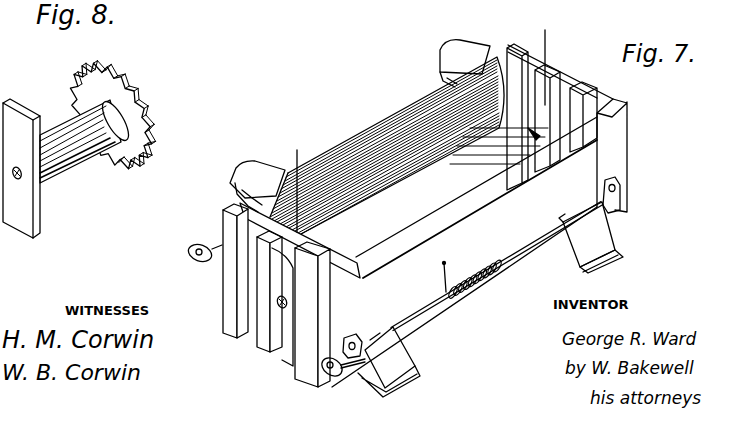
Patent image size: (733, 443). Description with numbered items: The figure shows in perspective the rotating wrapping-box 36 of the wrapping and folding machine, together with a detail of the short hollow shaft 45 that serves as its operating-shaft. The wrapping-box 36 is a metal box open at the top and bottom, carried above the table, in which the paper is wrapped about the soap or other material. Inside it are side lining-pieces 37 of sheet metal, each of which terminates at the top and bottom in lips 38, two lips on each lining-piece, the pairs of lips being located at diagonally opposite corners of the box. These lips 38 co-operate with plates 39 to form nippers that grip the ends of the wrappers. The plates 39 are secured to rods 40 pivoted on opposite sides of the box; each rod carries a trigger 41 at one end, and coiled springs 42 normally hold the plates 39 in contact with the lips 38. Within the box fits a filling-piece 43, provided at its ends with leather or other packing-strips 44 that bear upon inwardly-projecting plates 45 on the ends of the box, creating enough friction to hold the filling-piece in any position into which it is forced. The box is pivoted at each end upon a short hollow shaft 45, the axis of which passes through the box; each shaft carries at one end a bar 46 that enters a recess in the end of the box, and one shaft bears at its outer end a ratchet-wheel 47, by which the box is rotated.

In FIG. 7, the wrapping-box 36 is at (464, 252).
In FIG. 7, the side lining-piece 37 is at (383, 212).
In FIG. 7, the lip 38 is at (628, 270).
In FIG. 7, the plate 39 is at (440, 74).
In FIG. 7, the rod 40 is at (431, 307).
In FIG. 7, the trigger 41 is at (197, 262).
In FIG. 7, the coiled spring 42 is at (472, 282).
In FIG. 7, the filling-piece 43 is at (462, 173).
In FIG. 7, the packing-strip 44 is at (537, 133).
In FIG. 8, the short hollow shaft 45 is at (70, 147).
In FIG. 7, the short hollow shaft 45 is at (417, 122).
In FIG. 8, the bar 46 is at (18, 222).
In FIG. 8, the ratchet-wheel 47 is at (110, 95).